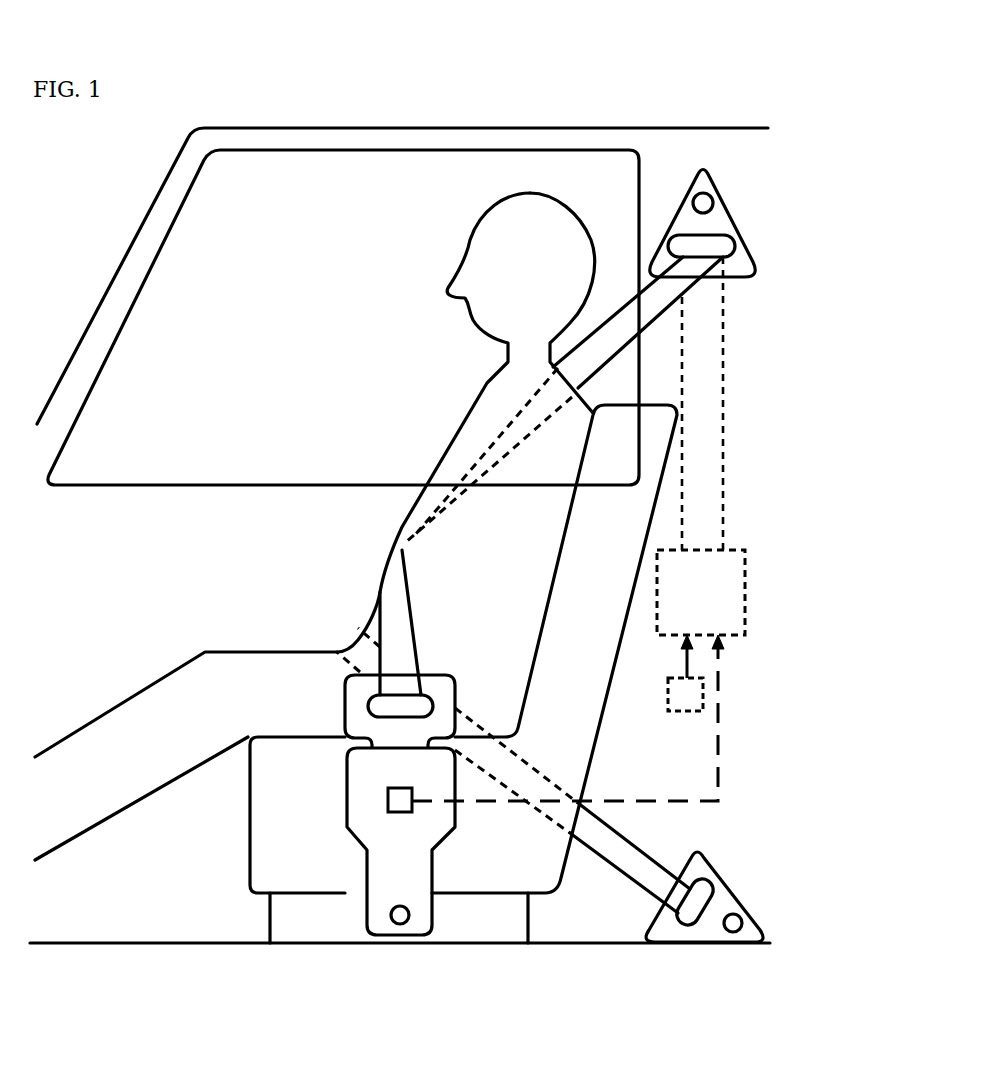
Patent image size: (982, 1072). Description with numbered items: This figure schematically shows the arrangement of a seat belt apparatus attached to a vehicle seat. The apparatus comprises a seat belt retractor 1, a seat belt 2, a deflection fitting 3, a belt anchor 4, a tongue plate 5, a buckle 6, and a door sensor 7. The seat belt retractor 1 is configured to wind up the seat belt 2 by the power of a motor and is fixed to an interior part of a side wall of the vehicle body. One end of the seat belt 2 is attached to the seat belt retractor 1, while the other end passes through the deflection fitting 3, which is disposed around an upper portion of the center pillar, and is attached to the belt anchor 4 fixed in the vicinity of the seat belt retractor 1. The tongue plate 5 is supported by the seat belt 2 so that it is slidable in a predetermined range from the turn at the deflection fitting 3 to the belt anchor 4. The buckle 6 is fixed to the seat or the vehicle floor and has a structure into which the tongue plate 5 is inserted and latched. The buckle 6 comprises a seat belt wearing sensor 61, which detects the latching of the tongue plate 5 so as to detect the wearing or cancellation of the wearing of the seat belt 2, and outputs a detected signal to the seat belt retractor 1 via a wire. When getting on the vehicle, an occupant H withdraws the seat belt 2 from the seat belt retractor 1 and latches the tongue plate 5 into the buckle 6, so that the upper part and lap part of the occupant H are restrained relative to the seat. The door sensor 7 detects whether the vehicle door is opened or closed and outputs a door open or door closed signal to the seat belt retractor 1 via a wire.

The seat belt retractor 1 is at (745, 592).
The seat belt 2 is at (660, 320).
The deflection fitting 3 is at (737, 215).
The belt anchor 4 is at (737, 883).
The tongue plate 5 is at (348, 695).
The buckle 6 is at (455, 820).
The seat belt wearing sensor 61 is at (388, 800).
The door sensor 7 is at (687, 712).
The occupant H is at (447, 455).